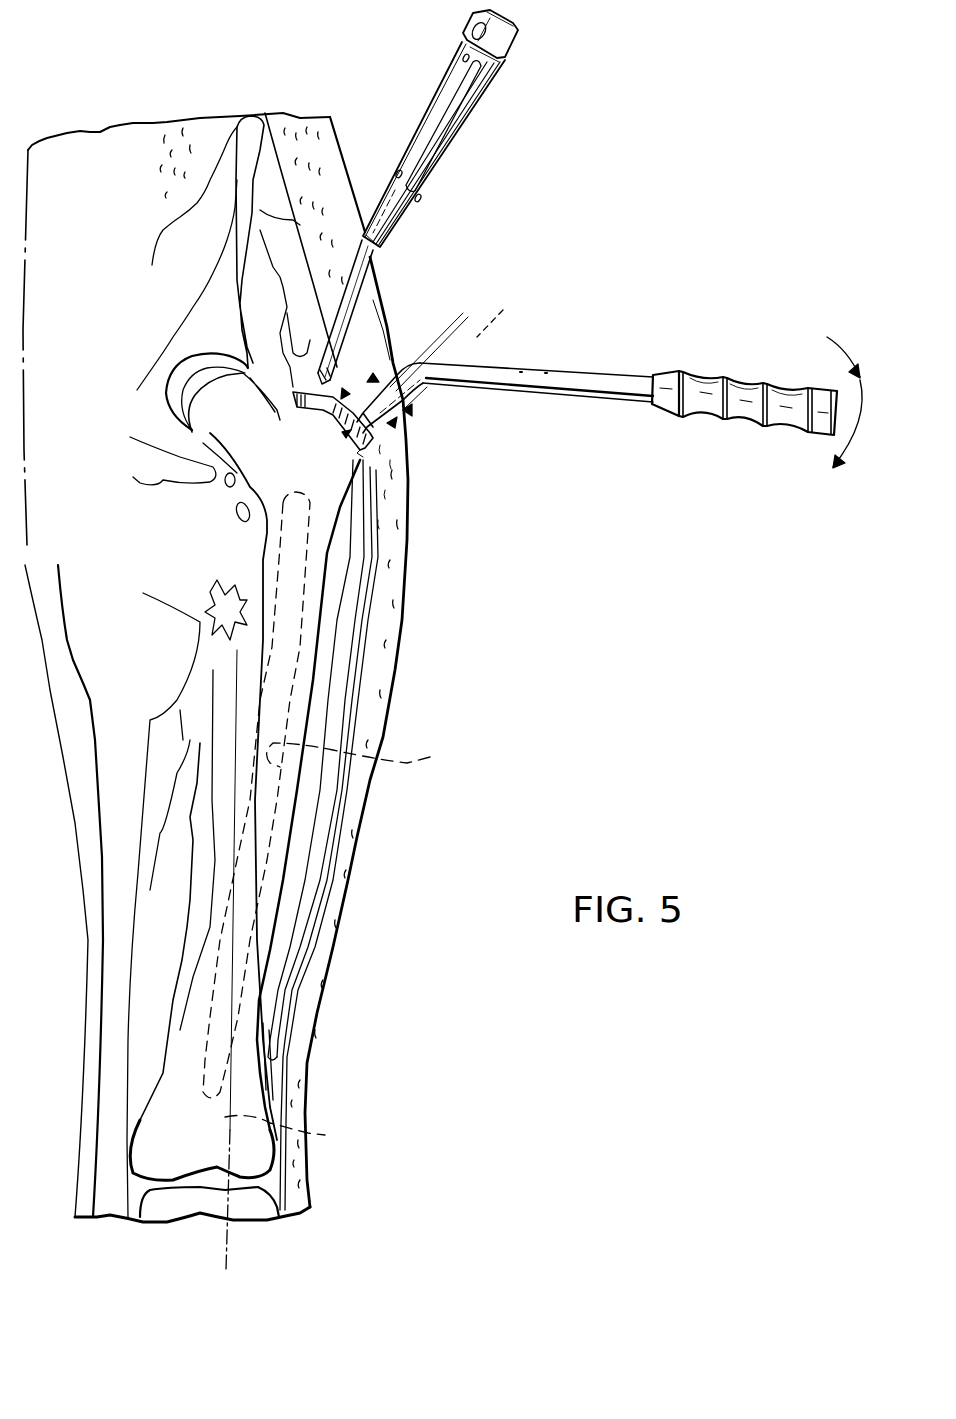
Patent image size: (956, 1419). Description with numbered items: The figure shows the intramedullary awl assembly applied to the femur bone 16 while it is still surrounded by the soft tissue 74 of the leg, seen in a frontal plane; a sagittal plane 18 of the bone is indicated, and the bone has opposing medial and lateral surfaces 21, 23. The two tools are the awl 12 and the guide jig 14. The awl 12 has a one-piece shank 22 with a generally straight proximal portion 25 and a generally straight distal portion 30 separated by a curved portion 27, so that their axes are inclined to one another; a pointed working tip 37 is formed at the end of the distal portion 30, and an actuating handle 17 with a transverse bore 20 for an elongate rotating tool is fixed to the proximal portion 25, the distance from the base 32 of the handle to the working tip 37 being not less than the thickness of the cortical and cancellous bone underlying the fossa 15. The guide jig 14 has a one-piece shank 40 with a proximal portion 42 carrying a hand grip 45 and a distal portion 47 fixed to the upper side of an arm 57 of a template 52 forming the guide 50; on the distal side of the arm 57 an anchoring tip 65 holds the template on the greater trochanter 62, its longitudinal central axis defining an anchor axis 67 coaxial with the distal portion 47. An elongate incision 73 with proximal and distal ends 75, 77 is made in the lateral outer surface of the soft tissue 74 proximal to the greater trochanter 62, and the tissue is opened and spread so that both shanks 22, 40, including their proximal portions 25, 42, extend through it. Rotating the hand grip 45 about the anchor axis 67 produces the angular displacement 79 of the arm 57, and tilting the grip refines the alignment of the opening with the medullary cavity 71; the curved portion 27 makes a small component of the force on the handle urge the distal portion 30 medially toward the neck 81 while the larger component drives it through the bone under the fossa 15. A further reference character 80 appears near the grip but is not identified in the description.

The awl 12 is at (413, 192).
The guide jig 14 is at (609, 376).
The fossa 15 is at (300, 407).
The femur bone 16 is at (316, 577).
The actuating handle 17 is at (433, 100).
The sagittal plane 18 is at (325, 1135).
The transverse bore 20 is at (473, 23).
The medial surface 21 is at (85, 980).
The shank 22 is at (366, 309).
The lateral surface 23 is at (393, 667).
The proximal portion 25 is at (337, 263).
The curved portion 27 is at (337, 273).
The distal portion 30 is at (328, 317).
The base 32 is at (378, 247).
The working tip 37 is at (313, 333).
The shank 40 is at (547, 361).
The proximal portion 42 is at (578, 403).
The hand grip 45 is at (743, 425).
The distal portion 47 is at (417, 357).
The guide 50 is at (390, 423).
The template 52 is at (343, 387).
The arm 57 is at (373, 437).
The greater trochanter 62 is at (346, 436).
The anchoring tip 65 is at (363, 460).
The anchor axis 67 is at (501, 313).
The medullary cavity 71 is at (360, 756).
The incision 73 is at (370, 307).
The soft tissue 74 is at (380, 627).
The proximal end 75 is at (363, 233).
The distal end 77 is at (412, 410).
The angular displacement 79 is at (373, 375).
The rotation arrow 80 is at (838, 387).
The neck 81 is at (213, 811).